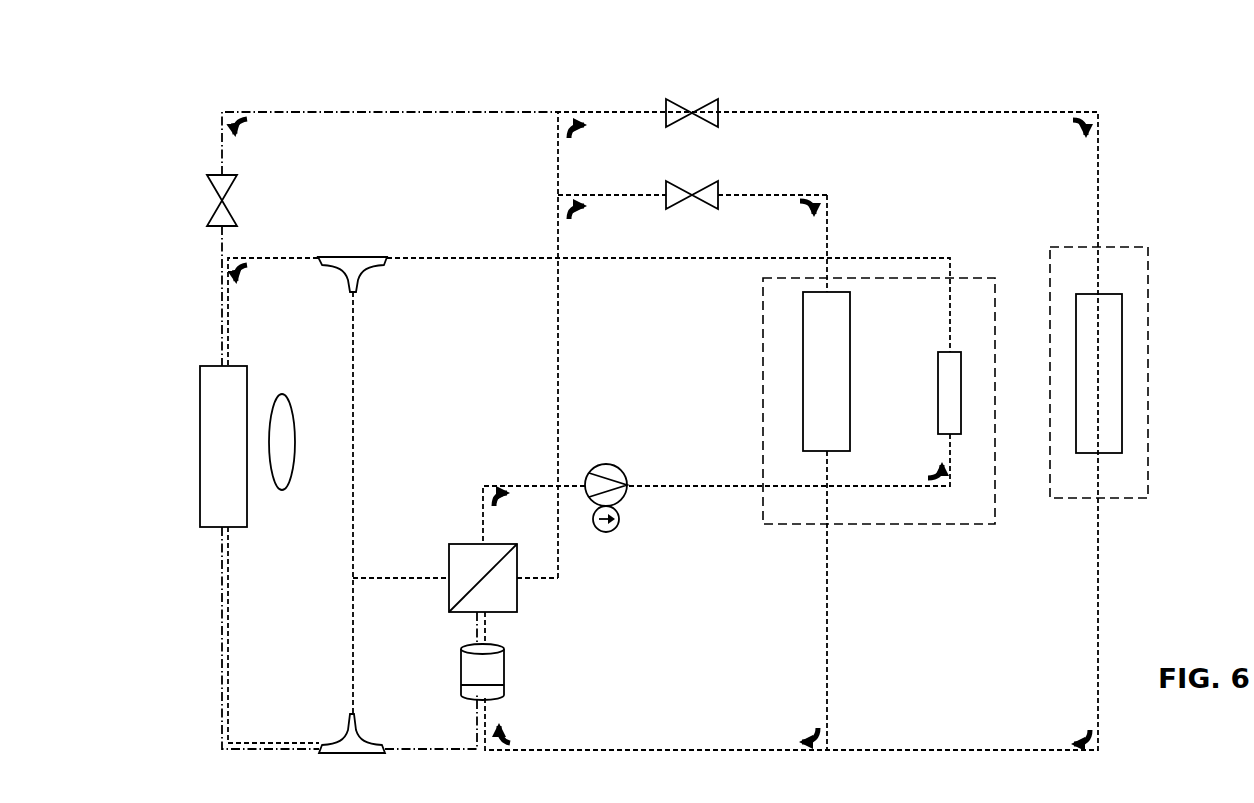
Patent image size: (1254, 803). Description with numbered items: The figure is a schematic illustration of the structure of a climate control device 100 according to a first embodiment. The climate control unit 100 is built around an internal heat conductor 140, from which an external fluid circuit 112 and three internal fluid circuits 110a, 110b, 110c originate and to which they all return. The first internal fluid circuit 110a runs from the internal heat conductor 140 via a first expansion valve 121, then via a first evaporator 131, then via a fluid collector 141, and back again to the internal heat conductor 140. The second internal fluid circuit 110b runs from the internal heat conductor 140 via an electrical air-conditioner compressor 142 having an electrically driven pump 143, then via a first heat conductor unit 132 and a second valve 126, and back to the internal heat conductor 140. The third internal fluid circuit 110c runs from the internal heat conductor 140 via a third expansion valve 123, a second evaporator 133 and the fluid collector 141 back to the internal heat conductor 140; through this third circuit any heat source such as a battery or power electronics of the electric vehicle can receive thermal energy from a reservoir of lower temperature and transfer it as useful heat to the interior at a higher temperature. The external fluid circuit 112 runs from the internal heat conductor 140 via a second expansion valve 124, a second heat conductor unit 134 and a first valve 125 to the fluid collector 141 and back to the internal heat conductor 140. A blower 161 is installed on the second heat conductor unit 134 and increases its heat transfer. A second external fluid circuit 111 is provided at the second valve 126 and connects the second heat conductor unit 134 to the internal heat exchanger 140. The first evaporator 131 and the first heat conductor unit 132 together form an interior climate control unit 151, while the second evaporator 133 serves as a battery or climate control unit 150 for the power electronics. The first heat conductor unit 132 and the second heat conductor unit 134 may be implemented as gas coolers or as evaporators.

The climate control device 100 is at (1077, 99).
The first internal fluid circuit 110a is at (827, 645).
The second internal fluid circuit 110b is at (632, 261).
The third internal fluid circuit 110c is at (957, 114).
The second external fluid circuit 111 is at (272, 257).
The external fluid circuit 112 is at (375, 110).
The first expansion valve 121 is at (705, 182).
The third expansion valve 123 is at (684, 110).
The second expansion valve 124 is at (207, 190).
The first valve 125 is at (333, 745).
The second valve 126 is at (352, 256).
The first evaporator 131 is at (803, 386).
The first heat conductor unit 132 is at (938, 392).
The second evaporator 133 is at (1122, 340).
The second heat conductor unit 134 is at (200, 440).
The internal heat conductor 140 is at (470, 543).
The fluid collector 141 is at (504, 665).
The electrical air-conditioner compressor 142 is at (603, 465).
The electrically driven pump 143 is at (606, 533).
The climate control unit for the power electronics 150 is at (1120, 247).
The interior climate control unit 151 is at (787, 525).
The blower 161 is at (291, 405).